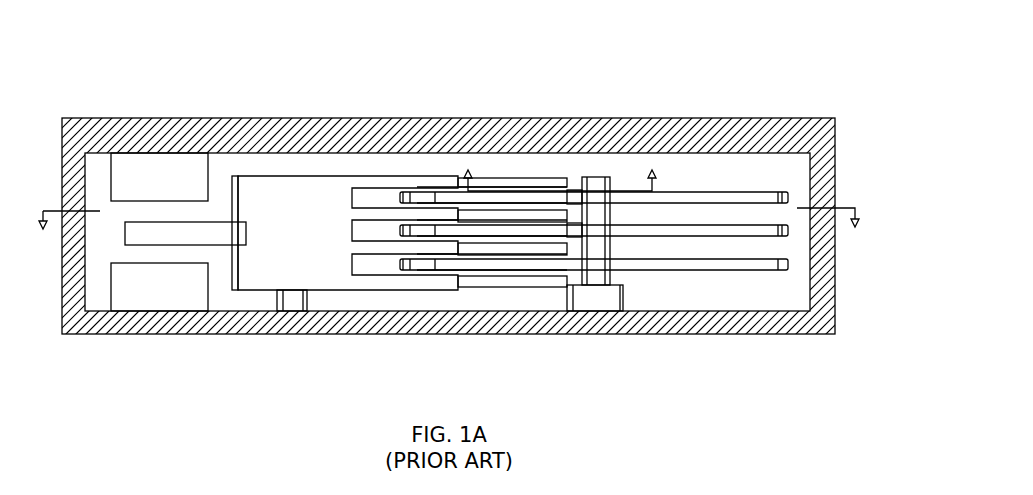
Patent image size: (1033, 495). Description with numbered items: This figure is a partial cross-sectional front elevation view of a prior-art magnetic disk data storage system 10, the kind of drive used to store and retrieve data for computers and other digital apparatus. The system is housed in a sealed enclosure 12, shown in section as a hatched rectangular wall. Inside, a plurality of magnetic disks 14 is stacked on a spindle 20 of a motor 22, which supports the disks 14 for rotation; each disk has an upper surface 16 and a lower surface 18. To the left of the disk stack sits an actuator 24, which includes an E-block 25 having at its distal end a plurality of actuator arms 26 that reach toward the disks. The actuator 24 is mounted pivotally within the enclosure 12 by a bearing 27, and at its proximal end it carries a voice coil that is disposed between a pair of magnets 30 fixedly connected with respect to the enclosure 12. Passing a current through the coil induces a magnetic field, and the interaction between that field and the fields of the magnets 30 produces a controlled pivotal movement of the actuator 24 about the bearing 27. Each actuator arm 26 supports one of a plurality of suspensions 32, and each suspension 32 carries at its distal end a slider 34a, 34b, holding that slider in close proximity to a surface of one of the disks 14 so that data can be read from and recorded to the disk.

The magnetic disk data storage system 10 is at (660, 86).
The sealed enclosure 12 is at (727, 327).
The magnetic disks 14 is at (670, 197).
The upper surface 16 is at (745, 194).
The lower surface 18 is at (740, 204).
The spindle 20 is at (618, 282).
The motor 22 is at (600, 303).
The actuator 24 is at (339, 150).
The E-block 25 is at (268, 170).
The actuator arms 26 is at (417, 180).
The bearing 27 is at (293, 305).
The magnets 30 is at (145, 168).
The suspensions 32 is at (525, 187).
The slider 34a is at (590, 204).
The slider 34b is at (579, 187).